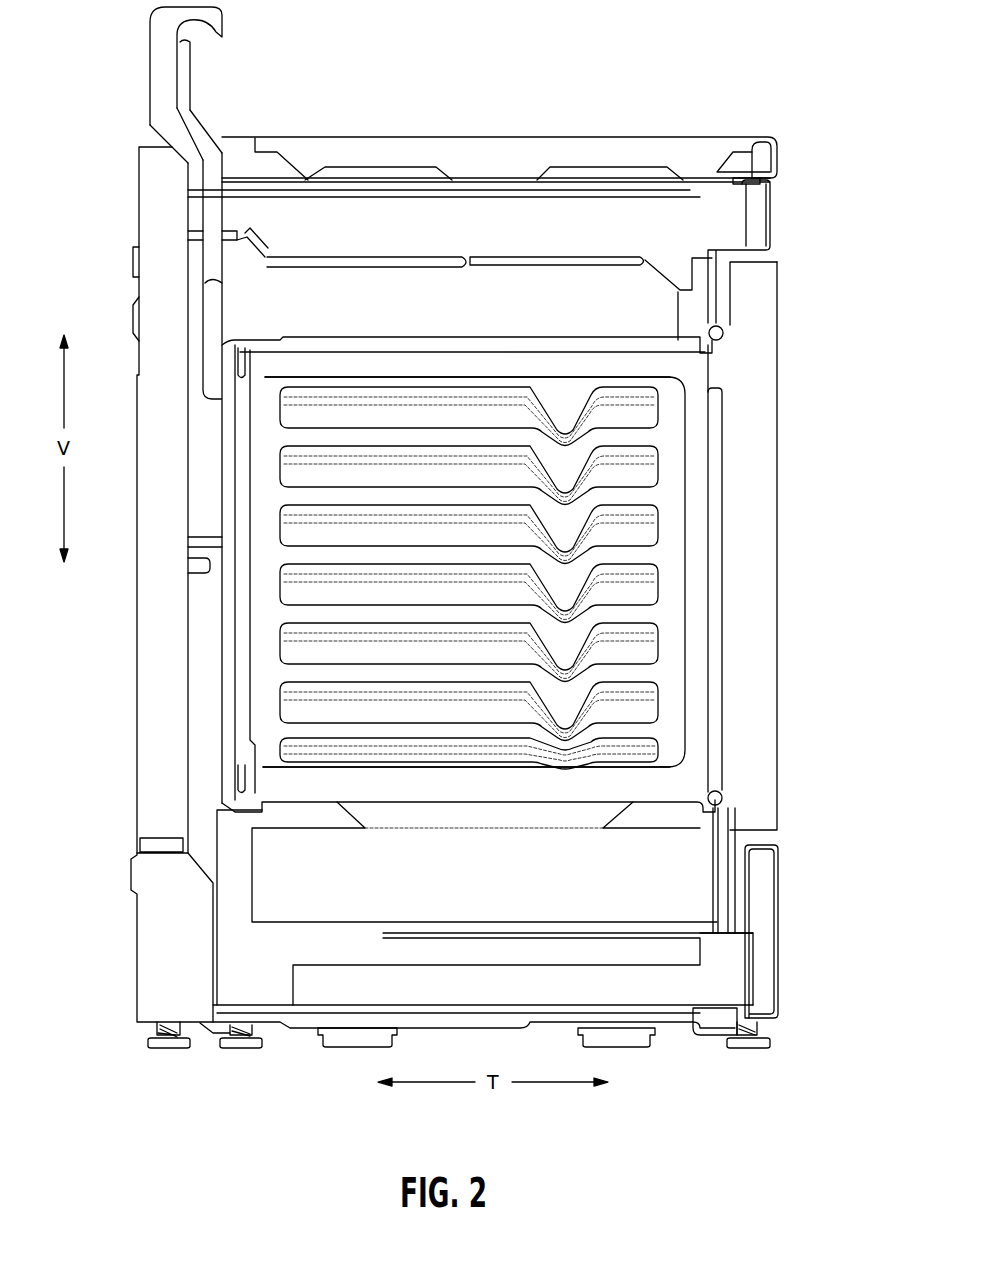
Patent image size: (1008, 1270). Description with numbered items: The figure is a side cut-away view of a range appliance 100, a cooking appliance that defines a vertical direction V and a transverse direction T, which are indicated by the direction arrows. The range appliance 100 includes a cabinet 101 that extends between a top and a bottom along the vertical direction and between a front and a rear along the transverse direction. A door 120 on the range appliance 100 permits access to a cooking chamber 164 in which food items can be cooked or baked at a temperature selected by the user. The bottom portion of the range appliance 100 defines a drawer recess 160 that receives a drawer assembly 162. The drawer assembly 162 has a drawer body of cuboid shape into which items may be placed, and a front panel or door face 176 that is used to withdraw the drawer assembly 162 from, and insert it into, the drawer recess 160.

The range appliance 100 is at (763, 42).
The cabinet 101 is at (625, 365).
The door 120 is at (752, 482).
The drawer recess 160 is at (657, 850).
The drawer assembly 162 is at (636, 937).
The cooking chamber 164 is at (685, 622).
The door face 176 is at (780, 953).